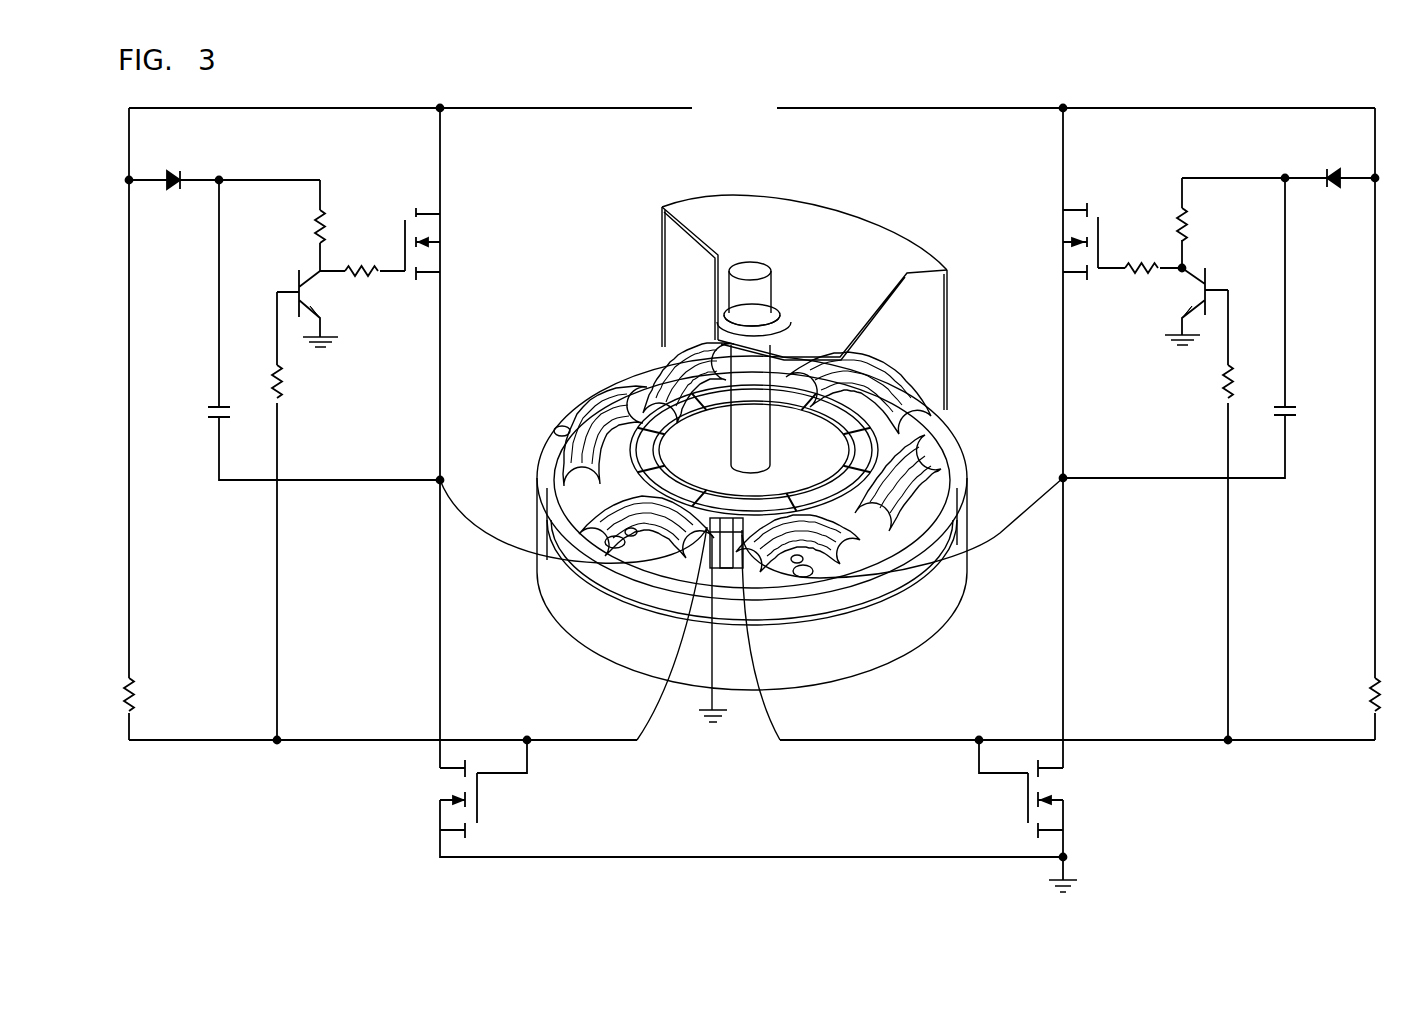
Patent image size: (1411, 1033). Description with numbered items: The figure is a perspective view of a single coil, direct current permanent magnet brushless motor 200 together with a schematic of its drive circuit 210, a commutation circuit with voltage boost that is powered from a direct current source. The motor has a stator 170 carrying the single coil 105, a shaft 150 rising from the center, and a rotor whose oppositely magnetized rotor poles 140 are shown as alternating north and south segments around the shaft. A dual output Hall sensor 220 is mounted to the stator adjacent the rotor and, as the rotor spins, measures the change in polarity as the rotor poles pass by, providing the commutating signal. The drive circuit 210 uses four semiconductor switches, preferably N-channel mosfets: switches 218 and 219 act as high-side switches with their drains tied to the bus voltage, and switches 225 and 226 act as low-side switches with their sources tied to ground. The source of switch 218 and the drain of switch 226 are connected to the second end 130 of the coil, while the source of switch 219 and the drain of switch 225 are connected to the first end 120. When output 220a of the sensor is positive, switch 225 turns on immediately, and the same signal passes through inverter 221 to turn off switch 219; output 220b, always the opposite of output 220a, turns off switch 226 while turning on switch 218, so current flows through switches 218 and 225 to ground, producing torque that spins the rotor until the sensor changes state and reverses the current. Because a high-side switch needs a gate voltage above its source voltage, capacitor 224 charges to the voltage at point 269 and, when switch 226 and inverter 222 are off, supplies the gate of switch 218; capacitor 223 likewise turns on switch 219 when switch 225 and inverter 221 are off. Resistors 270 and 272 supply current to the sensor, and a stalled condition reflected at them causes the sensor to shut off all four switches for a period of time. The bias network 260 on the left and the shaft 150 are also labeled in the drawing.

The drive circuit 210 is at (1180, 88).
The single coil, direct current permanent magnet brushless motor 200 is at (594, 336).
The shaft 150 is at (750, 268).
The stator 170 is at (937, 426).
The single coil 105 is at (935, 448).
The rotor poles 140 is at (672, 408).
The sensor 220 is at (742, 515).
The output 220a is at (768, 718).
The output 220b is at (650, 717).
The second end 130 is at (441, 479).
The first end 120 is at (1064, 477).
The semiconductor switch 218 is at (428, 212).
The semiconductor switch 219 is at (1070, 210).
The inverter 222 is at (311, 278).
The inverter 221 is at (1196, 280).
The capacitor 224 is at (211, 421).
The capacitor 223 is at (1294, 400).
The bias network 260 is at (243, 302).
The resistor 272 is at (135, 697).
The resistor 270 is at (1372, 686).
The point 269 is at (1228, 742).
The semiconductor switch 226 is at (478, 800).
The semiconductor switch 225 is at (1027, 805).